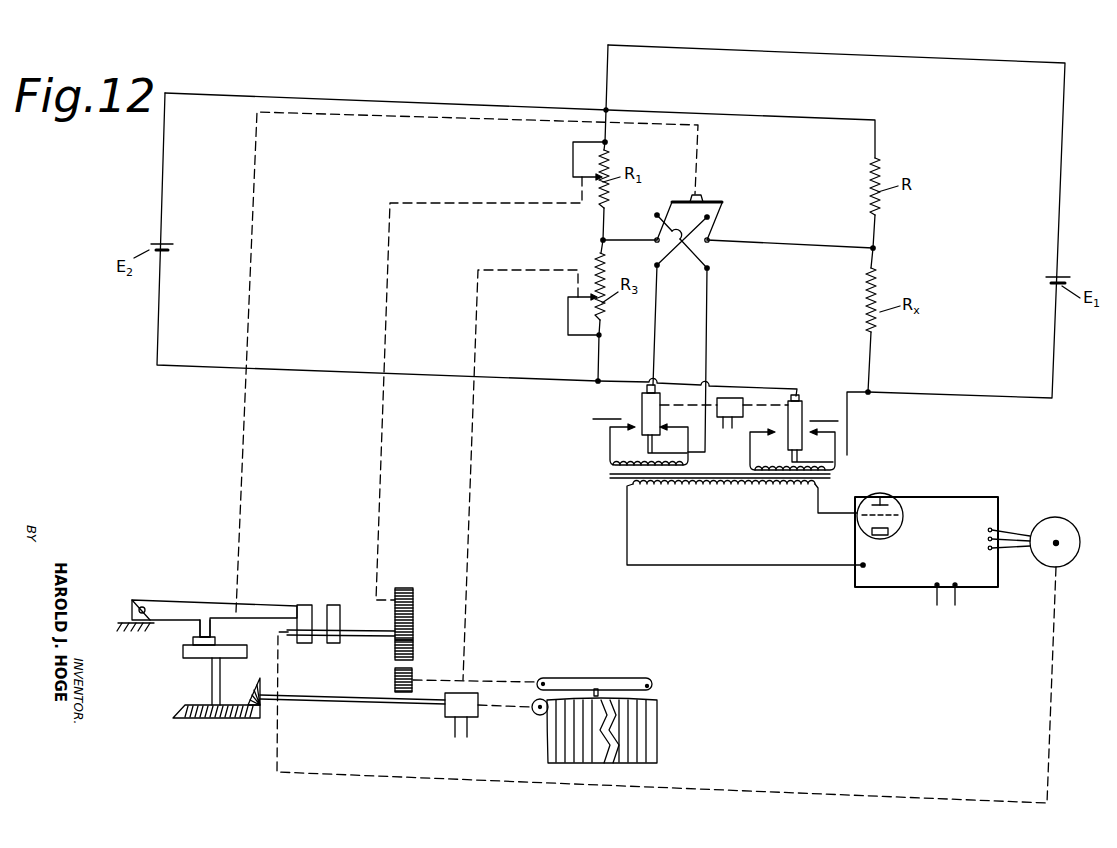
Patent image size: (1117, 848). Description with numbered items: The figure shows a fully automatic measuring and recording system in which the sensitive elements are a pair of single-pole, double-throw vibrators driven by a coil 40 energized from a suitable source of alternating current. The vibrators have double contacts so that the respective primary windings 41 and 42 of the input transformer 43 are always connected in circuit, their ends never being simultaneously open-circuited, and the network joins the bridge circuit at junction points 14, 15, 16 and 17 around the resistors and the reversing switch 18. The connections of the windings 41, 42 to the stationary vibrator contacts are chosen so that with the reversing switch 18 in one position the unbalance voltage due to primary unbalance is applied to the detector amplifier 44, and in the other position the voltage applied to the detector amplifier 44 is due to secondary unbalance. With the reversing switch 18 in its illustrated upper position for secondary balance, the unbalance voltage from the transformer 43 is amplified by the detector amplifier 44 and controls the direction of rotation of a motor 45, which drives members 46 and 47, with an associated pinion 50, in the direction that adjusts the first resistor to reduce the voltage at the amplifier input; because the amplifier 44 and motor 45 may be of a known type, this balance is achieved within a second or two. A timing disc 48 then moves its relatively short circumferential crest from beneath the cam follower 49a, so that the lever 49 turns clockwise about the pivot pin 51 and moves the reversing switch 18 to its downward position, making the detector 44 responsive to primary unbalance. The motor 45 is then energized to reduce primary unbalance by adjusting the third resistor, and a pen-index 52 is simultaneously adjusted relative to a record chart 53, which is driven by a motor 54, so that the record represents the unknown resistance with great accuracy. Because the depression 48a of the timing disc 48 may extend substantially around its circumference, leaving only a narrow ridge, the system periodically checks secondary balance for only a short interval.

The junction point 14 is at (600, 240).
The junction point 15 is at (875, 247).
The junction point 16 is at (595, 379).
The junction point 17 is at (877, 407).
The reversing switch 18 is at (681, 198).
The coil 40 is at (729, 398).
The primary winding 41 is at (612, 458).
The primary winding 42 is at (838, 464).
The input transformer 43 is at (612, 481).
The detector amplifier 44 is at (902, 578).
The motor 45 is at (1042, 523).
The member 46 is at (414, 647).
The member 47 is at (414, 592).
The timing disc 48 is at (182, 655).
The depression 48a is at (217, 644).
The lever 49 is at (213, 603).
The cam follower 49a is at (200, 629).
The pinion 50 is at (395, 673).
The pivot pin 51 is at (140, 604).
The pen-index 52 is at (595, 689).
The record chart 53 is at (656, 742).
The motor 54 is at (445, 714).